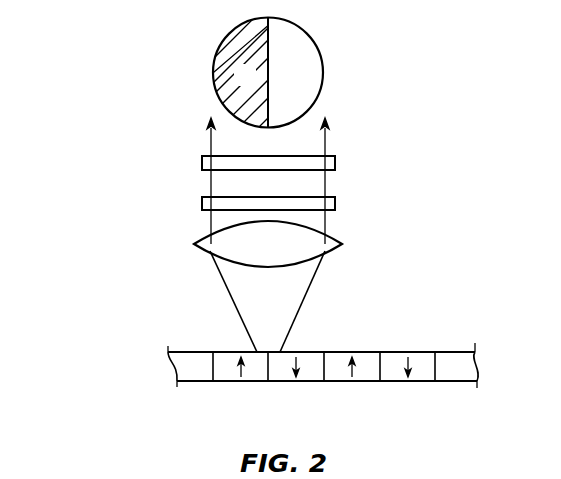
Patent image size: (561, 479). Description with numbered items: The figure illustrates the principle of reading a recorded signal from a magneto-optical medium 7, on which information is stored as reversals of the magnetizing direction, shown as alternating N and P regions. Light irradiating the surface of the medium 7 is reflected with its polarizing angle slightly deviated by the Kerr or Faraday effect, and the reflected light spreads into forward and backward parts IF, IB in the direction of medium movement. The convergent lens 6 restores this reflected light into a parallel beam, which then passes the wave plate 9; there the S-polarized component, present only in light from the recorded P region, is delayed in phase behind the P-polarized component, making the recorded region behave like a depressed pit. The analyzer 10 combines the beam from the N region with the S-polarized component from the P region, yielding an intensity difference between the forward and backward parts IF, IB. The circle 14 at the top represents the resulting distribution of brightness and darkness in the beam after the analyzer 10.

The circle 14 is at (323, 72).
The analyzer 10 is at (335, 163).
The wave plate 9 is at (335, 203).
The convergent lens 6 is at (342, 244).
The medium 7 is at (168, 360).
The forward part of the reflected beam IF is at (245, 295).
The backward part of the reflected beam IB is at (292, 303).